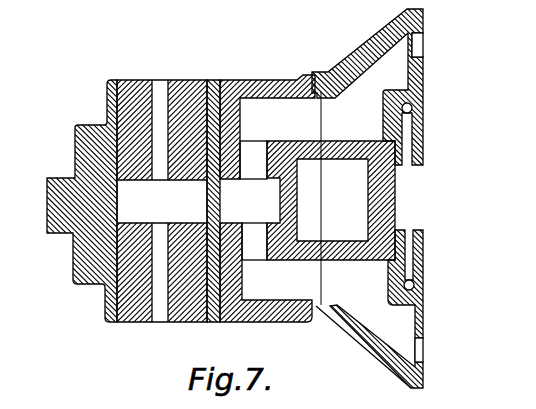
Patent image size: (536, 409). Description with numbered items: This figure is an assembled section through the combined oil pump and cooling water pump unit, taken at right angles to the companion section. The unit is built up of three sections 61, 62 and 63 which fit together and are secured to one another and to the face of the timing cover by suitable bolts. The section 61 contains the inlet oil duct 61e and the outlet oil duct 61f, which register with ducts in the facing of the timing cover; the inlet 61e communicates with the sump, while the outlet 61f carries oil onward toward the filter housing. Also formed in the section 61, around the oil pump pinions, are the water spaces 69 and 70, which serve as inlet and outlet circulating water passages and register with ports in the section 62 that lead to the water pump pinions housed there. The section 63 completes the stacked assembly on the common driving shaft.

The section 61 is at (391, 198).
The inlet oil duct 61e is at (418, 108).
The outlet oil duct 61f is at (428, 285).
The section 62 is at (273, 74).
The section 63 is at (197, 78).
The water space 69 is at (430, 346).
The water space 70 is at (427, 49).